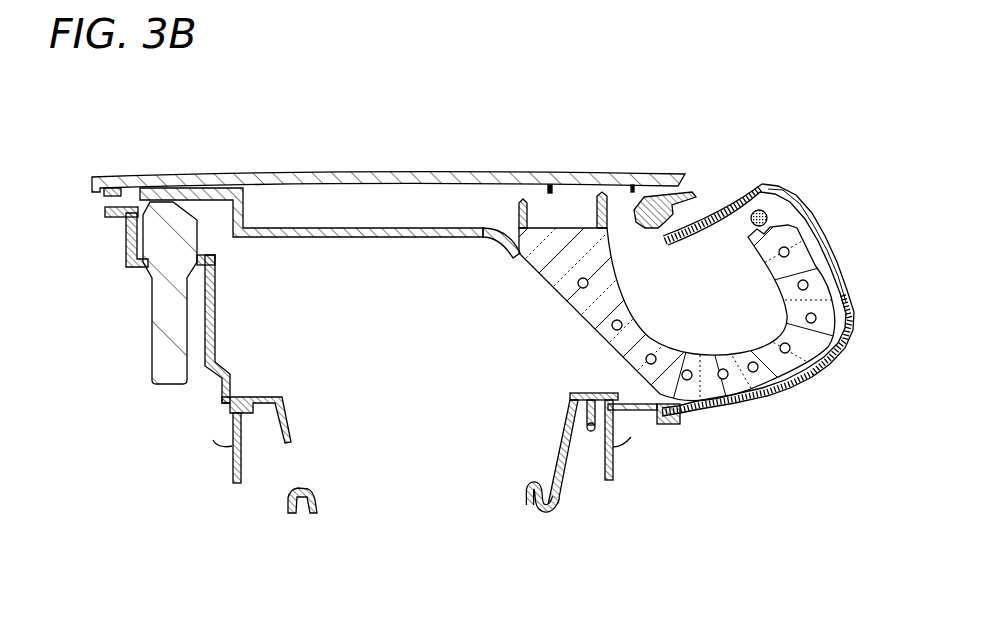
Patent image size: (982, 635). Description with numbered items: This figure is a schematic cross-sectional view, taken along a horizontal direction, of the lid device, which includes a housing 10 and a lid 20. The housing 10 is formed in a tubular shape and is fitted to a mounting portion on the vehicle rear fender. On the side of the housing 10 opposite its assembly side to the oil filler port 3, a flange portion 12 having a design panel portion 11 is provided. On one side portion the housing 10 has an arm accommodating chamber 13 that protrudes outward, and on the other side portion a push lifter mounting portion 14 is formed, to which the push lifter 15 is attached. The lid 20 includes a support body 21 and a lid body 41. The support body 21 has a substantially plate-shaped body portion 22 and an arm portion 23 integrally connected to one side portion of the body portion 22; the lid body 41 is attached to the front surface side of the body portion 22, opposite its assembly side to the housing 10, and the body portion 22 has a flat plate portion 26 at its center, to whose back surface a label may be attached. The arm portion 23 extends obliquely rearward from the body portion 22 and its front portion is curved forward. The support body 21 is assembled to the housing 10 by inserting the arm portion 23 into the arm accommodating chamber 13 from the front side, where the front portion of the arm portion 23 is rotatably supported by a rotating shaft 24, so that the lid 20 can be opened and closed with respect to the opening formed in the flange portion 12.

The oil filler port 3 is at (525, 499).
The housing 10 is at (182, 314).
The design panel portion 11 is at (118, 206).
The flange portion 12 is at (85, 224).
The push lifter mounting portion 14 is at (132, 264).
The push lifter 15 is at (168, 290).
The lid 20 is at (388, 208).
The support body 21 is at (506, 254).
The body portion 22 is at (330, 230).
The arm portion 23 is at (772, 365).
The rotating shaft 24 is at (758, 210).
The flat plate portion 26 is at (385, 207).
The lid body 41 is at (530, 175).
The arm accommodating chamber 13 is at (853, 326).